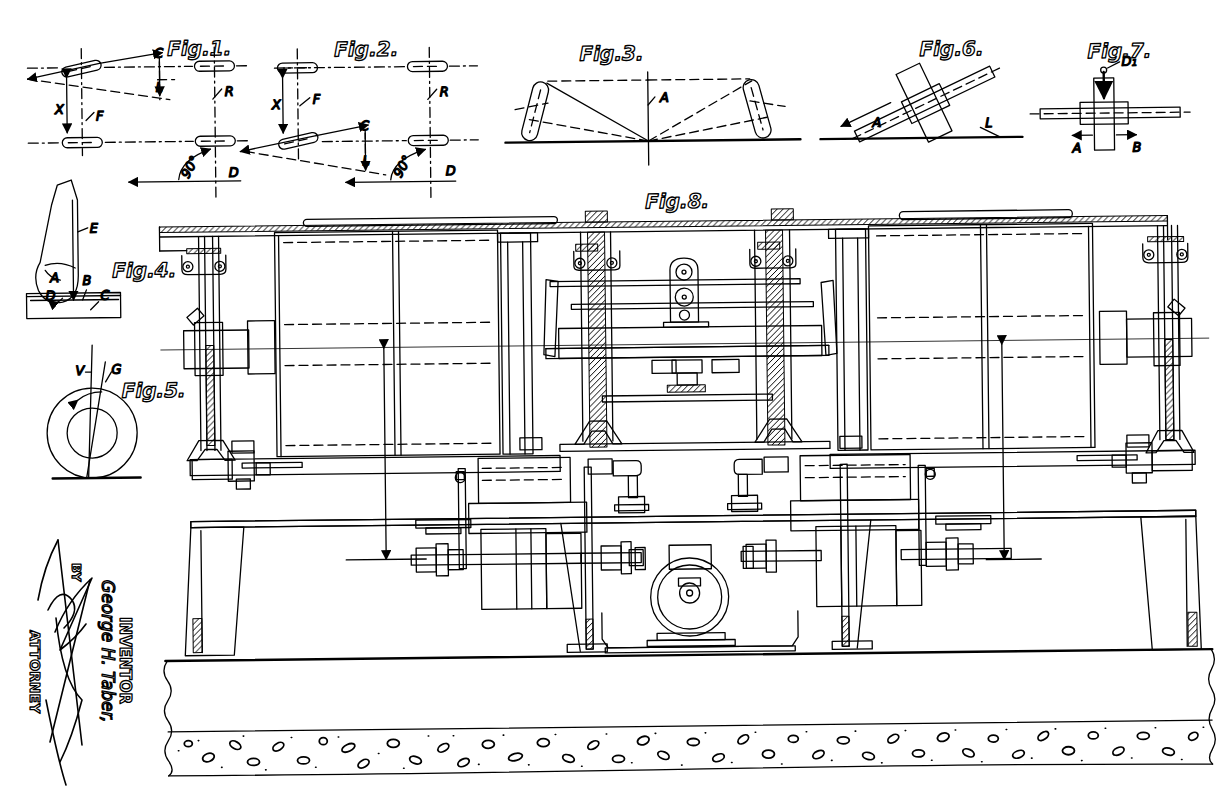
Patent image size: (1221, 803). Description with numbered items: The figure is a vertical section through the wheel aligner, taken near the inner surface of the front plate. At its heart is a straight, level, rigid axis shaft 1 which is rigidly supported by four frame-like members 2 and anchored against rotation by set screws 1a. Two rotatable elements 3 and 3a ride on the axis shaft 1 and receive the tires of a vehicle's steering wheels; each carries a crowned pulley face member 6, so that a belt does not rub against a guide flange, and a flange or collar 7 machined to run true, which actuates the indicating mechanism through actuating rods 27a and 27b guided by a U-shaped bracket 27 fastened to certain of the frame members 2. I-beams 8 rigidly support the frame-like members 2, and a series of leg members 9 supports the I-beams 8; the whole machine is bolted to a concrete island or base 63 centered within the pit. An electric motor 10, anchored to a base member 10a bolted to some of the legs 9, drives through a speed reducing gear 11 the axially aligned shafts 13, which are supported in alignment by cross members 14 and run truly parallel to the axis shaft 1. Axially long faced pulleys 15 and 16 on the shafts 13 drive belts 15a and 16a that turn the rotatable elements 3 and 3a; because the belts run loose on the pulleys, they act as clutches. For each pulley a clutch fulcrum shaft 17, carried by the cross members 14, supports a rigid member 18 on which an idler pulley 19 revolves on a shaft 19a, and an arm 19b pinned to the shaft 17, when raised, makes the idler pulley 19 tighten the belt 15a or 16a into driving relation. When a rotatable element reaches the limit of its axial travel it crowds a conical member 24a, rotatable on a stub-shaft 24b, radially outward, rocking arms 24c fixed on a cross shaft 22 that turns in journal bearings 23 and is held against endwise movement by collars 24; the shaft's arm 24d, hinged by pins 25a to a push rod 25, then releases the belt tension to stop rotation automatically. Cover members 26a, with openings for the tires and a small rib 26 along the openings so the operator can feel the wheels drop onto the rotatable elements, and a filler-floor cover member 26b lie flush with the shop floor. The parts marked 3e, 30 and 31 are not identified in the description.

The axis shaft 1 is at (565, 355).
The set screws 1a is at (190, 305).
The frame-like members 2 is at (215, 405).
The rotatable element 3 is at (1062, 260).
The rotatable element 3a is at (280, 228).
The hub 3e is at (260, 316).
The pulley face member 6 is at (530, 235).
The flange or collar 7 is at (572, 400).
The I-beams 8 is at (1090, 518).
The leg members 9 is at (225, 618).
The electric motor 10 is at (715, 625).
The base member 10a is at (628, 647).
The speed reducing gear 11 is at (700, 545).
The shafts 13 is at (642, 549).
The cross members 14 is at (412, 568).
The pulley 15 is at (905, 600).
The belt 15a is at (930, 610).
The pulley 16 is at (490, 596).
The belt 16a is at (532, 613).
The clutch fulcrum shaft 17 is at (485, 572).
The rigid member 18 is at (457, 496).
The idler pulley 19 is at (492, 456).
The shaft 19a is at (455, 478).
The arm 19b is at (639, 572).
The cross shaft 22 is at (336, 471).
The journal bearings 23 is at (618, 446).
The collars 24 is at (190, 474).
The conical members 24a is at (258, 436).
The stub-shaft 24b is at (282, 456).
The arms 24c is at (248, 484).
The arm 24d is at (736, 475).
The push rods 25 is at (640, 490).
The pins 25a is at (646, 506).
The rib 26 is at (940, 214).
The cover members 26a is at (452, 215).
The cover member 26b is at (207, 231).
The U-shaped bracket 27 is at (620, 280).
The actuating rod 27a is at (672, 262).
The actuating rod 27b is at (705, 327).
The block 30 is at (660, 373).
The center block 31 is at (700, 368).
The concrete island or base 63 is at (690, 712).